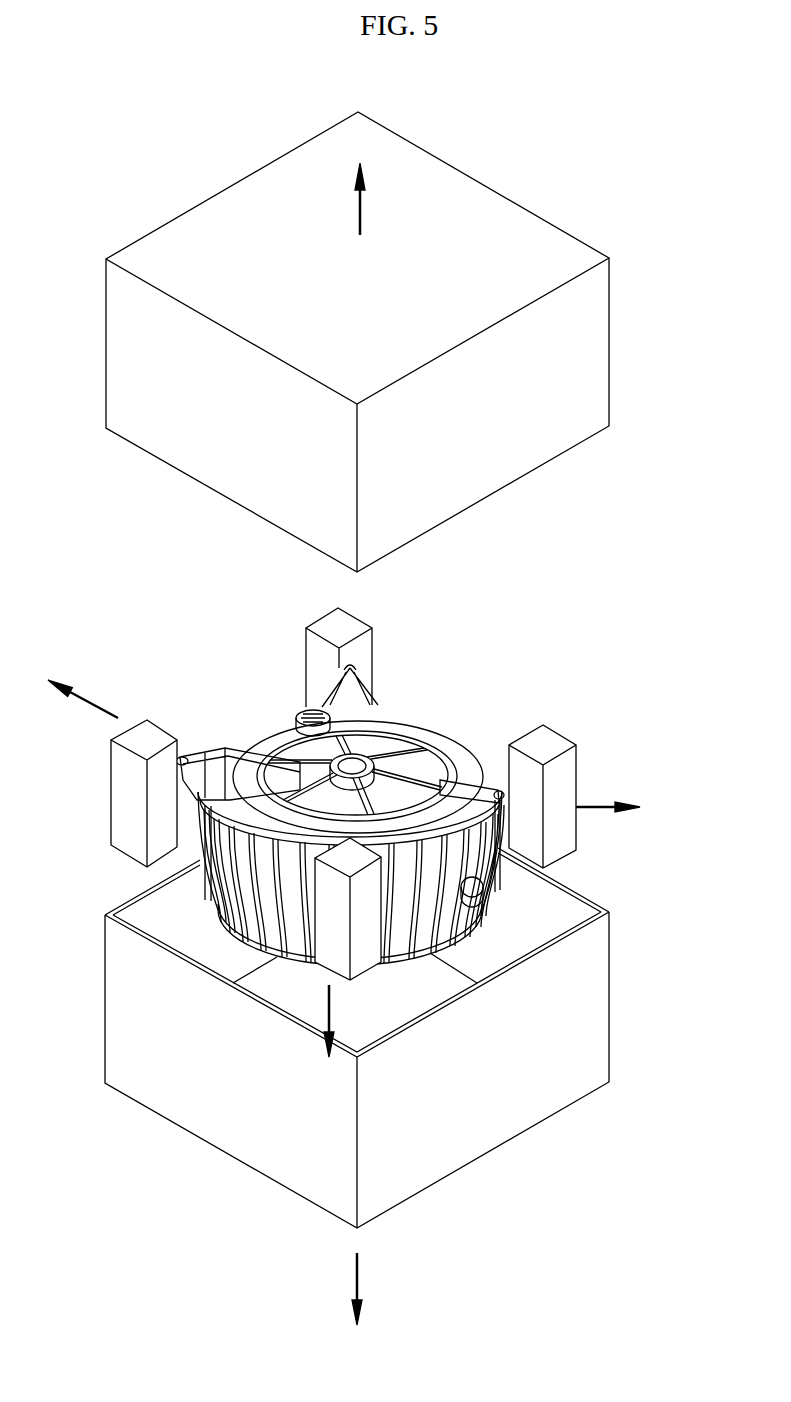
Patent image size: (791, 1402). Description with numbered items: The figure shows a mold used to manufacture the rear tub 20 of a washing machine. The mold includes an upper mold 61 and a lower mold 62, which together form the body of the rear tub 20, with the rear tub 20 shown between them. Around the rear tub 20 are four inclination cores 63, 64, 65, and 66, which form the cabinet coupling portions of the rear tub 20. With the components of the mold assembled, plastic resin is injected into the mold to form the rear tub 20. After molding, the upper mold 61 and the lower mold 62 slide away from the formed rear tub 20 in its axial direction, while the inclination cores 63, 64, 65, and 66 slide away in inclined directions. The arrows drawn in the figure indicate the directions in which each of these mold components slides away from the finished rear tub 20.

The rear tub 20 is at (423, 722).
The upper mold 61 is at (518, 221).
The lower mold 62 is at (600, 967).
The inclination core 63 is at (358, 628).
The inclination core 64 is at (547, 747).
The inclination core 65 is at (140, 737).
The inclination core 66 is at (320, 937).